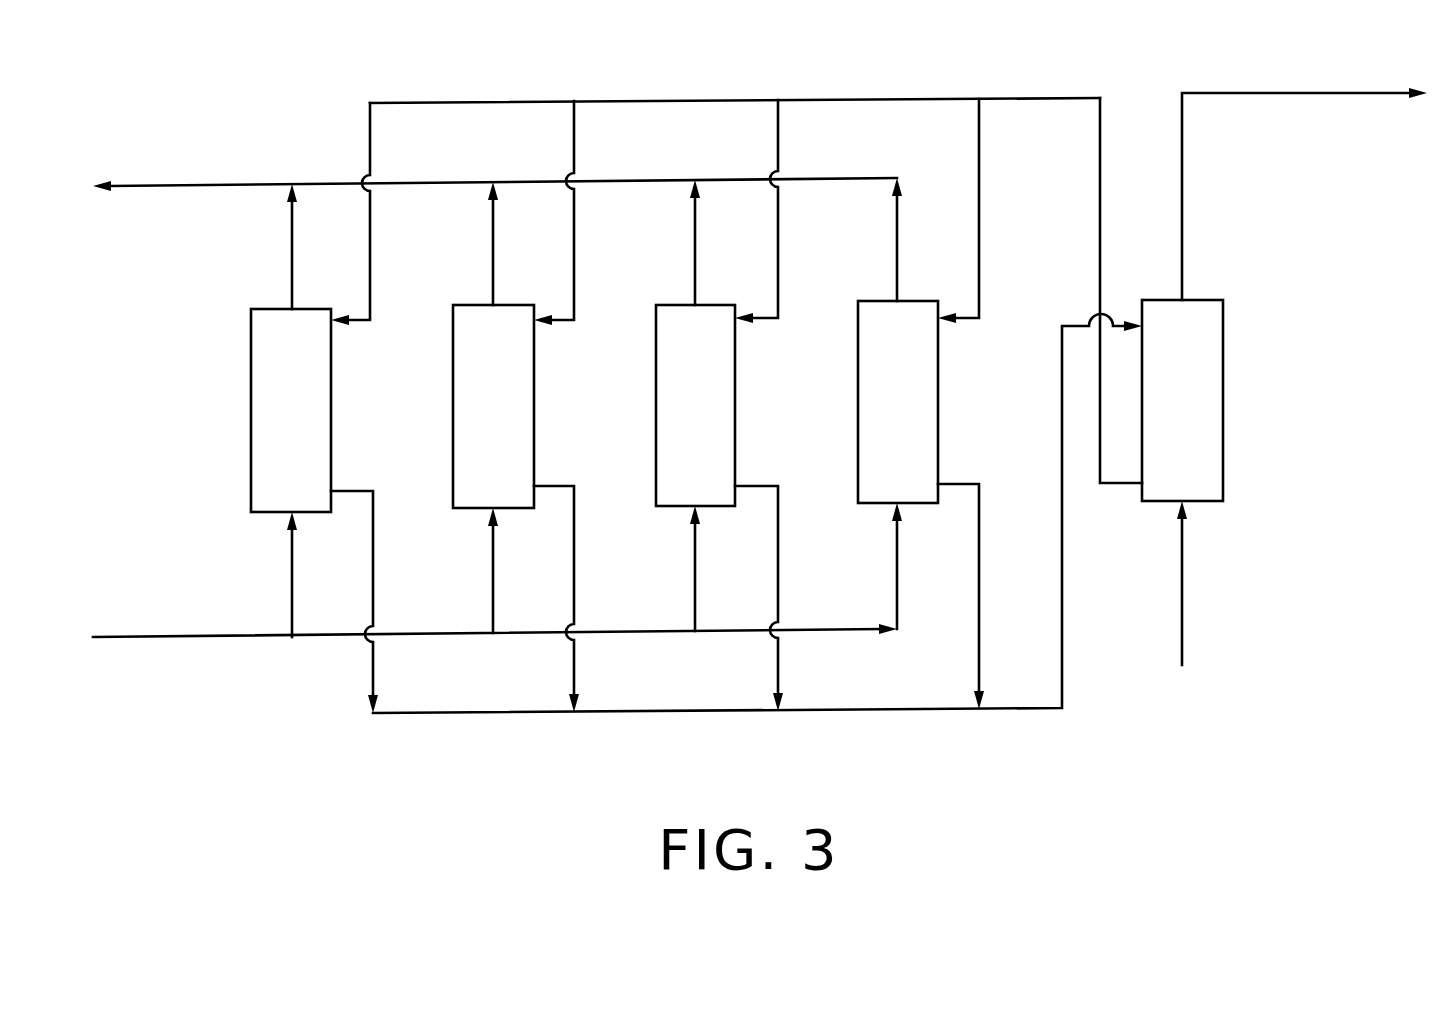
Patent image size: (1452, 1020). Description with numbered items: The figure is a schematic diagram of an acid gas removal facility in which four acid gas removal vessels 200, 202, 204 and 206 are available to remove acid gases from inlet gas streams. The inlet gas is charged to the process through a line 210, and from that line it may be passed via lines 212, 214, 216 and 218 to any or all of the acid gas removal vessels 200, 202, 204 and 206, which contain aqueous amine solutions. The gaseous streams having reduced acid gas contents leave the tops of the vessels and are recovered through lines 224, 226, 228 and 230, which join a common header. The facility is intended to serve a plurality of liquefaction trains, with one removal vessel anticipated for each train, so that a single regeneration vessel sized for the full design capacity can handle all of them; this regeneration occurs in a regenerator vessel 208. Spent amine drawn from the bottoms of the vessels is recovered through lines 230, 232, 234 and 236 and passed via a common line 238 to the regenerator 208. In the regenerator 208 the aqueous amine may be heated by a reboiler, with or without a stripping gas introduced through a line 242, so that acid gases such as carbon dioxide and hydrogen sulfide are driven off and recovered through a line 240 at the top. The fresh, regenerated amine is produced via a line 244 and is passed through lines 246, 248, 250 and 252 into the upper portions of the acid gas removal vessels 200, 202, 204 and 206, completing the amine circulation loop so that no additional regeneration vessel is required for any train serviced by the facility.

The acid gas removal vessel 200 is at (250, 415).
The acid gas removal vessel 202 is at (453, 410).
The acid gas removal vessel 204 is at (656, 410).
The acid gas removal vessel 206 is at (858, 415).
The regenerator vessel 208 is at (1225, 390).
The line 210 is at (175, 637).
The line 212 is at (292, 580).
The line 214 is at (495, 592).
The line 216 is at (697, 568).
The line 218 is at (898, 572).
The line 224 is at (292, 242).
The line 226 is at (492, 238).
The line 228 is at (190, 184).
The line 230 is at (898, 250).
The line 232 is at (576, 562).
The line 234 is at (780, 567).
The line 236 is at (981, 575).
The line 238 is at (680, 713).
The line 240 is at (1258, 95).
The line 242 is at (1184, 588).
The line 244 is at (1102, 220).
The line 246 is at (981, 210).
The line 248 is at (780, 232).
The line 250 is at (576, 280).
The line 252 is at (372, 290).